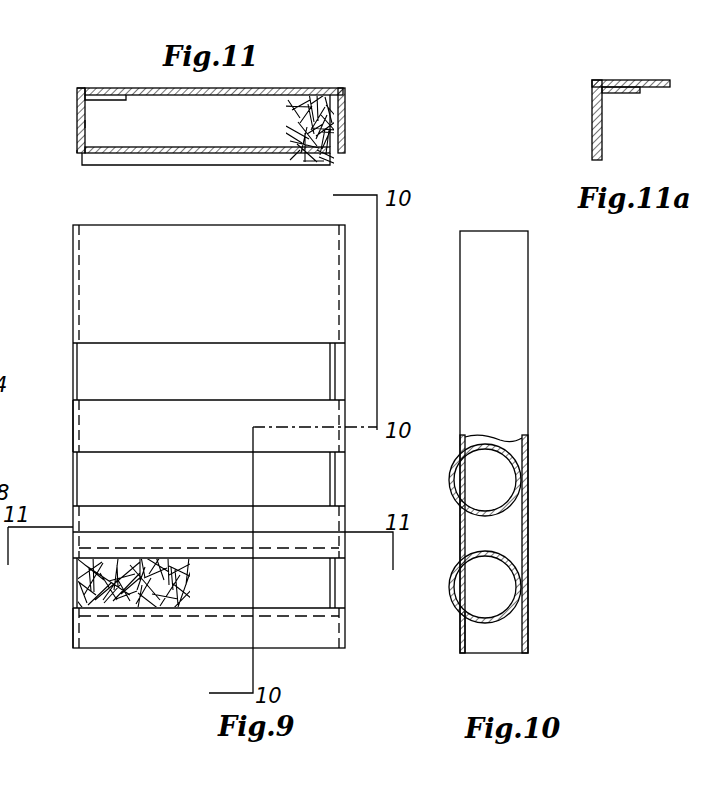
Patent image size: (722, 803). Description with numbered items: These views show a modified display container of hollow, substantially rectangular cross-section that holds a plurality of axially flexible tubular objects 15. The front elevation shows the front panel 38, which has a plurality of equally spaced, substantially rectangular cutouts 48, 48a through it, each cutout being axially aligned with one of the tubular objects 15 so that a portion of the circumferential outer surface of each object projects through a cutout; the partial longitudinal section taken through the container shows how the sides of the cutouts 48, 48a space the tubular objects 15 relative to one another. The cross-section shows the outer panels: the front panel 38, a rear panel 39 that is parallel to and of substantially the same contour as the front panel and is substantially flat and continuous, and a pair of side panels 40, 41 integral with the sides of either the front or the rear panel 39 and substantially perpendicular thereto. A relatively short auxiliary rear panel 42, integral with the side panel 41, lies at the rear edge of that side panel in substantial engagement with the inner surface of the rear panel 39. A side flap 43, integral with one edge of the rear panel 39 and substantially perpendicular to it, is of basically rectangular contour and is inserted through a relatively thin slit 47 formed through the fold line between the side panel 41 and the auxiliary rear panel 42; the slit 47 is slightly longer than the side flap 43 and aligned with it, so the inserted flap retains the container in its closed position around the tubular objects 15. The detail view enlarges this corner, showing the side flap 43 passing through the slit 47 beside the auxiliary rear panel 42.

In FIG. 9, the axially flexible tubular object 15 is at (140, 600).
In FIG. 10, the axially flexible tubular object 15 is at (450, 586).
In FIG. 11, the front panel 38 is at (80, 153).
In FIG. 9, the front panel 38 is at (86, 418).
In FIG. 10, the front panel 38 is at (462, 528).
In FIG. 11, the rear panel 39 is at (290, 92).
In FIG. 10, the rear panel 39 is at (525, 515).
In FIG. 11, the side panel 40 is at (345, 118).
In FIG. 9, the side panel 40 is at (340, 630).
In FIG. 10, the side panel 40 is at (513, 372).
In FIG. 11, the side panel 41 is at (76, 112).
In FIG. 9, the side panel 41 is at (66, 636).
In FIG. 11, the auxiliary rear panel 42 is at (104, 95).
In FIG. 11A, the auxiliary rear panel 42 is at (612, 90).
In FIG. 11, the side flap 43 is at (86, 122).
In FIG. 11A, the side flap 43 is at (606, 128).
In FIG. 11, the slit 47 is at (79, 88).
In FIG. 11A, the slit 47 is at (596, 82).
In FIG. 9, the rectangular cutout 48 is at (218, 600).
In FIG. 10, the rectangular cutout 48 is at (456, 612).
In FIG. 9, the rectangular cutout 48a is at (185, 456).
In FIG. 10, the rectangular cutout 48a is at (456, 454).